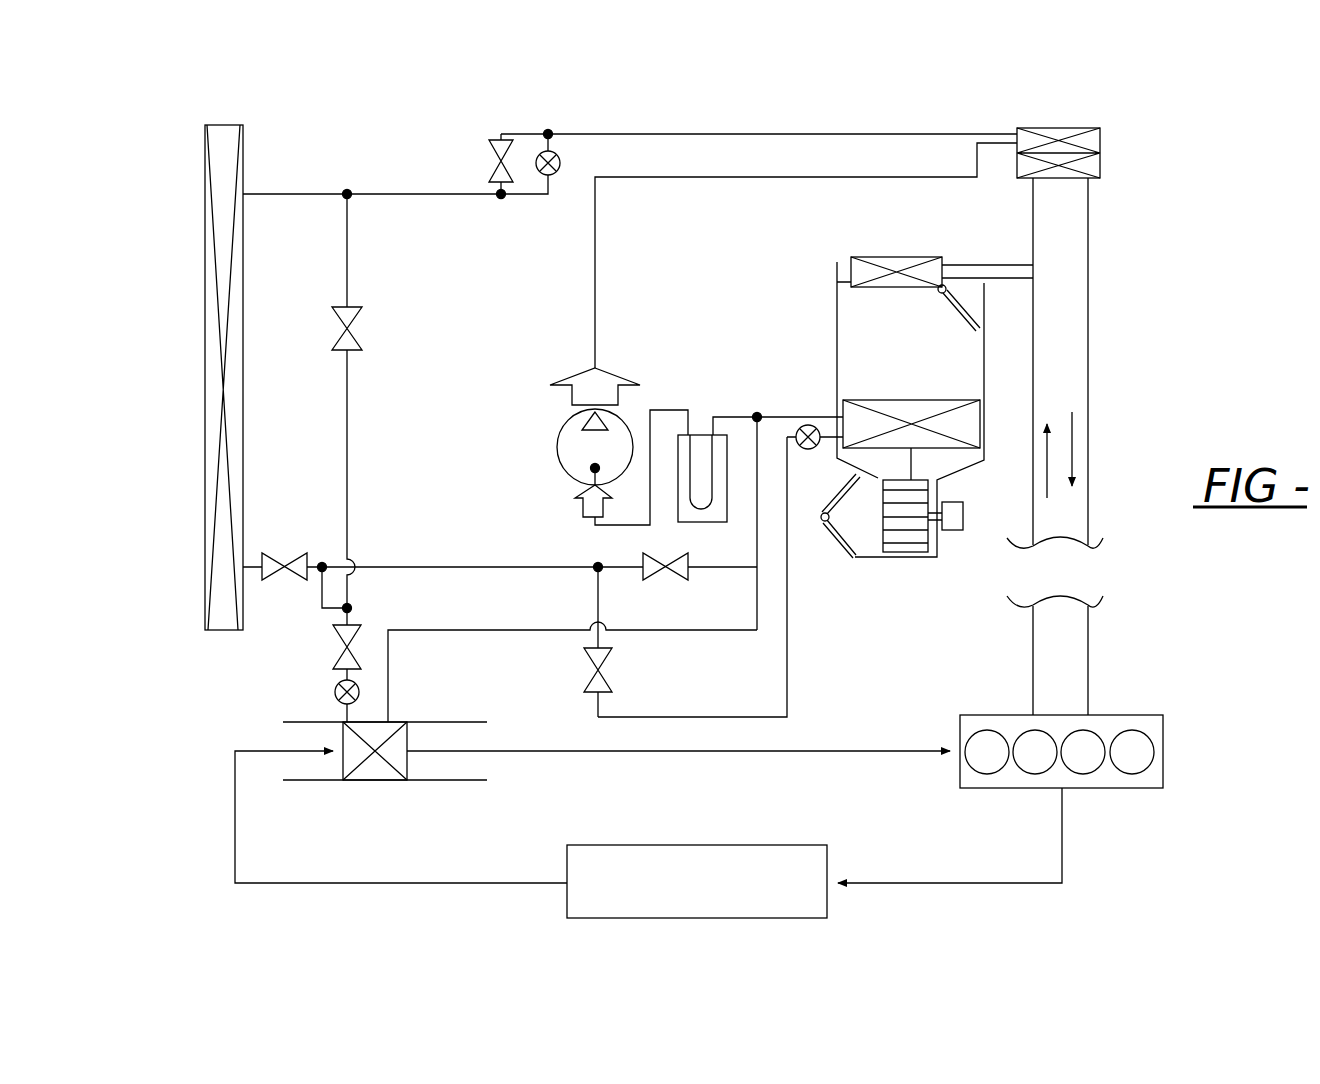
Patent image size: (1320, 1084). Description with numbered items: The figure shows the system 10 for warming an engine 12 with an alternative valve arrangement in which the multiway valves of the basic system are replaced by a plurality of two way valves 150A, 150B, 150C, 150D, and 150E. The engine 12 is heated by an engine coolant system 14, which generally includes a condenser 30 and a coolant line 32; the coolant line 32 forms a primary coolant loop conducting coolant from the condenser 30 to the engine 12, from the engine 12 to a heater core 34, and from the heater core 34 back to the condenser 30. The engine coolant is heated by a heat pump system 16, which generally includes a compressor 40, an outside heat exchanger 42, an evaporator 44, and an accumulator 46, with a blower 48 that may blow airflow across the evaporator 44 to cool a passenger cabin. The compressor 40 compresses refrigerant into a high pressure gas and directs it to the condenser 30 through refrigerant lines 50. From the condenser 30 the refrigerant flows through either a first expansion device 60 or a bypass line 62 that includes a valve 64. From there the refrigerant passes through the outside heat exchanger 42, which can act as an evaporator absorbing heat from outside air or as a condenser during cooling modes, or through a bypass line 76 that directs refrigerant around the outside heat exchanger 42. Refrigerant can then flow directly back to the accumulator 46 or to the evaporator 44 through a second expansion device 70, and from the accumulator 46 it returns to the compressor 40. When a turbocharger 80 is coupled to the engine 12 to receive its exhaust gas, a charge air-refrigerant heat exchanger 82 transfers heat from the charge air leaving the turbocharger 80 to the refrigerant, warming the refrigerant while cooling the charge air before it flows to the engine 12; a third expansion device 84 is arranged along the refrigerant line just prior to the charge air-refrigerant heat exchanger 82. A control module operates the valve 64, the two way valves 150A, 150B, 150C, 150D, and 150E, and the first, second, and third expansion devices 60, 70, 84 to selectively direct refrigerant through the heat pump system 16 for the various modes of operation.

The system 10 is at (158, 166).
The engine 12 is at (1165, 750).
The engine coolant system 14 is at (1115, 190).
The heat pump system 16 is at (400, 120).
The condenser 30 is at (1102, 140).
The coolant line 32 is at (1090, 382).
The heater core 34 is at (893, 257).
The compressor 40 is at (557, 443).
The outside heat exchanger 42 is at (205, 360).
The evaporator 44 is at (945, 400).
The accumulator 46 is at (700, 445).
The blower 48 is at (908, 532).
The refrigerant lines 50 is at (595, 302).
The first expansion device 60 is at (558, 172).
The bypass line 62 is at (523, 134).
The valve 64 is at (488, 146).
The second expansion device 70 is at (808, 450).
The bypass line 76 is at (350, 262).
The turbocharger 80 is at (690, 843).
The charge air-refrigerant heat exchanger 82 is at (365, 782).
The third expansion device 84 is at (335, 692).
The two way valve 150A is at (362, 328).
The two way valve 150B is at (290, 553).
The two way valve 150C is at (678, 580).
The two way valve 150D is at (333, 655).
The two way valve 150E is at (585, 678).